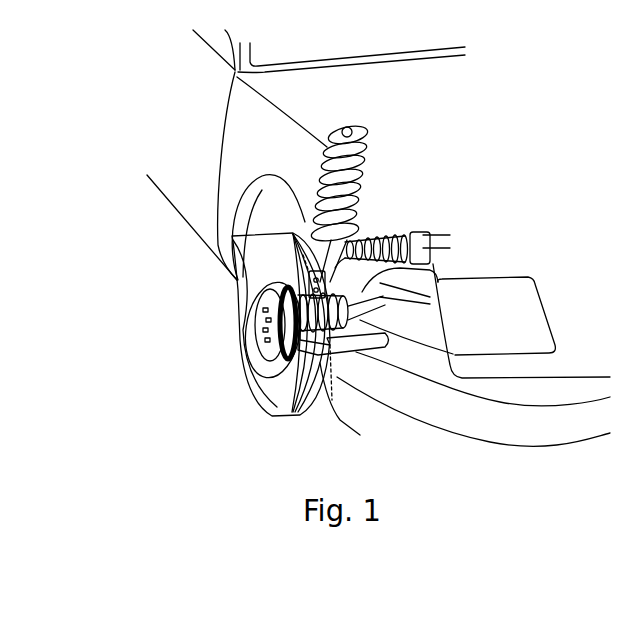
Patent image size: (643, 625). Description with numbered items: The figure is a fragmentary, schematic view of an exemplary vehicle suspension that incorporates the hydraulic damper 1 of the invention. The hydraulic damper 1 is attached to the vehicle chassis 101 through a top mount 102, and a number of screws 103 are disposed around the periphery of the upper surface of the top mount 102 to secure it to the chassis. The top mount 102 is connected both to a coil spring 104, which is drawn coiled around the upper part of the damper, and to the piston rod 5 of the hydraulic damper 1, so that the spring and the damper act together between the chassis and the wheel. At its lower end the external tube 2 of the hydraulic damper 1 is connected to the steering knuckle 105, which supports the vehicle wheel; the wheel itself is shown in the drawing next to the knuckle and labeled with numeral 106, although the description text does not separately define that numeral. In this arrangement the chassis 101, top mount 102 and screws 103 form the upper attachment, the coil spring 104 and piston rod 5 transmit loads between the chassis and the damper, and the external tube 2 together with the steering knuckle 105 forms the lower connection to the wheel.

The hydraulic damper 1 is at (363, 231).
The external tube 2 is at (318, 226).
The piston rod 5 is at (362, 193).
The vehicle chassis 101 is at (233, 79).
The top mount 102 is at (367, 150).
The screws 103 is at (332, 126).
The coil spring 104 is at (358, 178).
The steering knuckle 105 is at (300, 287).
The wheel 106 is at (268, 392).